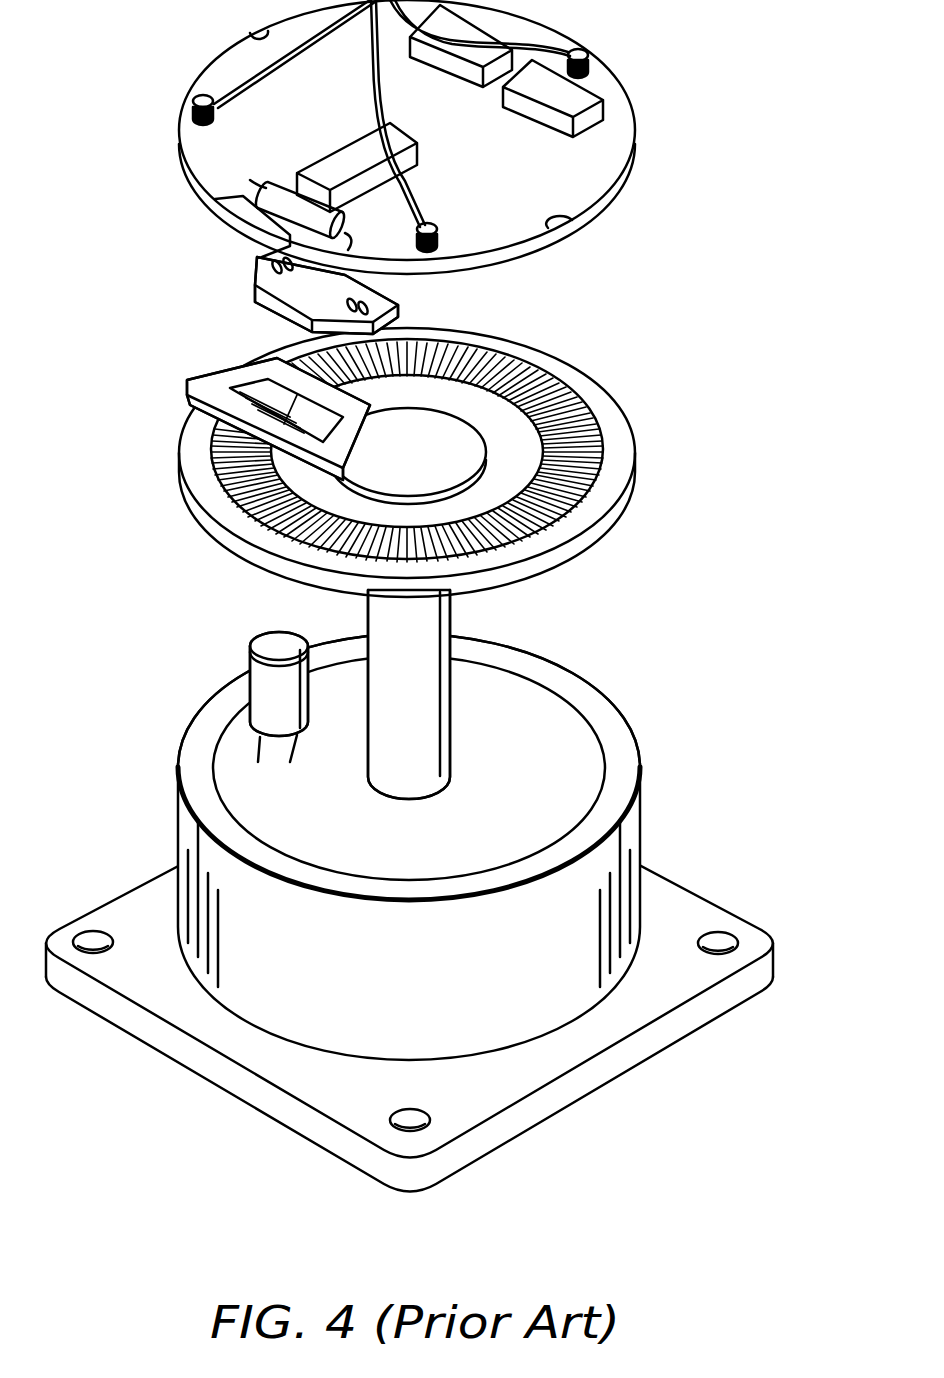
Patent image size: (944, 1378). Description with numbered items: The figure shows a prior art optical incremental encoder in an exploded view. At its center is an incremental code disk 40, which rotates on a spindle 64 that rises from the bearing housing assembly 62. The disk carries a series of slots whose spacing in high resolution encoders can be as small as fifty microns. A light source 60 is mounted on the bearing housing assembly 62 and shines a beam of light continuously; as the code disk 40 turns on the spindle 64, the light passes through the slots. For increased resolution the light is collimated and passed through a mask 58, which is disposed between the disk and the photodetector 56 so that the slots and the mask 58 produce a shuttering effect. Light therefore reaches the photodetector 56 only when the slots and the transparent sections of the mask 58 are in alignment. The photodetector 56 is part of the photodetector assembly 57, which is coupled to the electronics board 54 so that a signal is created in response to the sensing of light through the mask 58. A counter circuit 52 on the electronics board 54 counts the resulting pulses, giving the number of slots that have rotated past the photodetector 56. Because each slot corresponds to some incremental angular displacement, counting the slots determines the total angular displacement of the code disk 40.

The incremental code disk 40 is at (636, 442).
The counter circuit 52 is at (580, 112).
The electronics board 54 is at (607, 160).
The photodetector 56 is at (257, 257).
The photodetector assembly 57 is at (257, 280).
The mask 58 is at (220, 386).
The light source 60 is at (268, 696).
The bearing housing assembly 62 is at (622, 772).
The spindle 64 is at (412, 681).